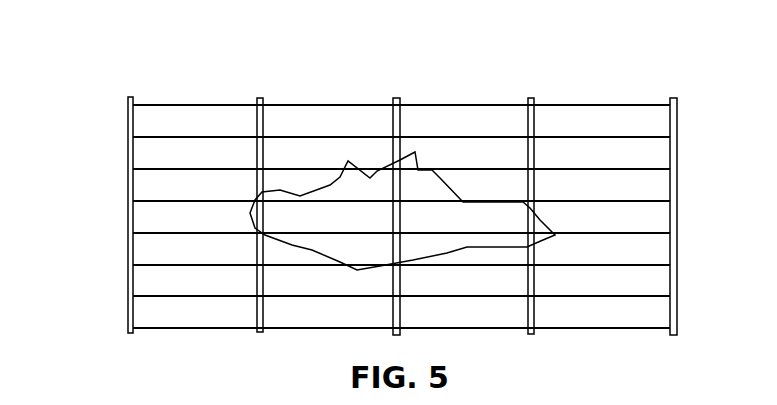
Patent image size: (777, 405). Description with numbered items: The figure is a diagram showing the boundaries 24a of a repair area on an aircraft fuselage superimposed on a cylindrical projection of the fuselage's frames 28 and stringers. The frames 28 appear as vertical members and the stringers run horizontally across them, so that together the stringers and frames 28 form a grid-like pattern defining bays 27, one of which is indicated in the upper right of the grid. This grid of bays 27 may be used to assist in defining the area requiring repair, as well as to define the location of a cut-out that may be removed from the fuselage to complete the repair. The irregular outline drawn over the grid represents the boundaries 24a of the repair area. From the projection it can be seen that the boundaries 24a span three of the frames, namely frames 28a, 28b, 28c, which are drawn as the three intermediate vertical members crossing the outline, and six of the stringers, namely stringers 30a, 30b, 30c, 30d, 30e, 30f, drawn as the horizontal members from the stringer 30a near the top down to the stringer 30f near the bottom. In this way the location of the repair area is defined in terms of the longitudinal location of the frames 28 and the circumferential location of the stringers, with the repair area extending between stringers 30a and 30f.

The boundaries of the repair area 24a is at (433, 210).
The bay 27 is at (585, 123).
The frame 28 is at (128, 117).
The frame 28a is at (260, 98).
The frame 28b is at (396, 98).
The frame 28c is at (534, 122).
The stringer 30a is at (311, 137).
The stringer 30b is at (183, 168).
The stringer 30c is at (165, 201).
The stringer 30d is at (153, 233).
The stringer 30e is at (183, 265).
The stringer 30f is at (472, 265).